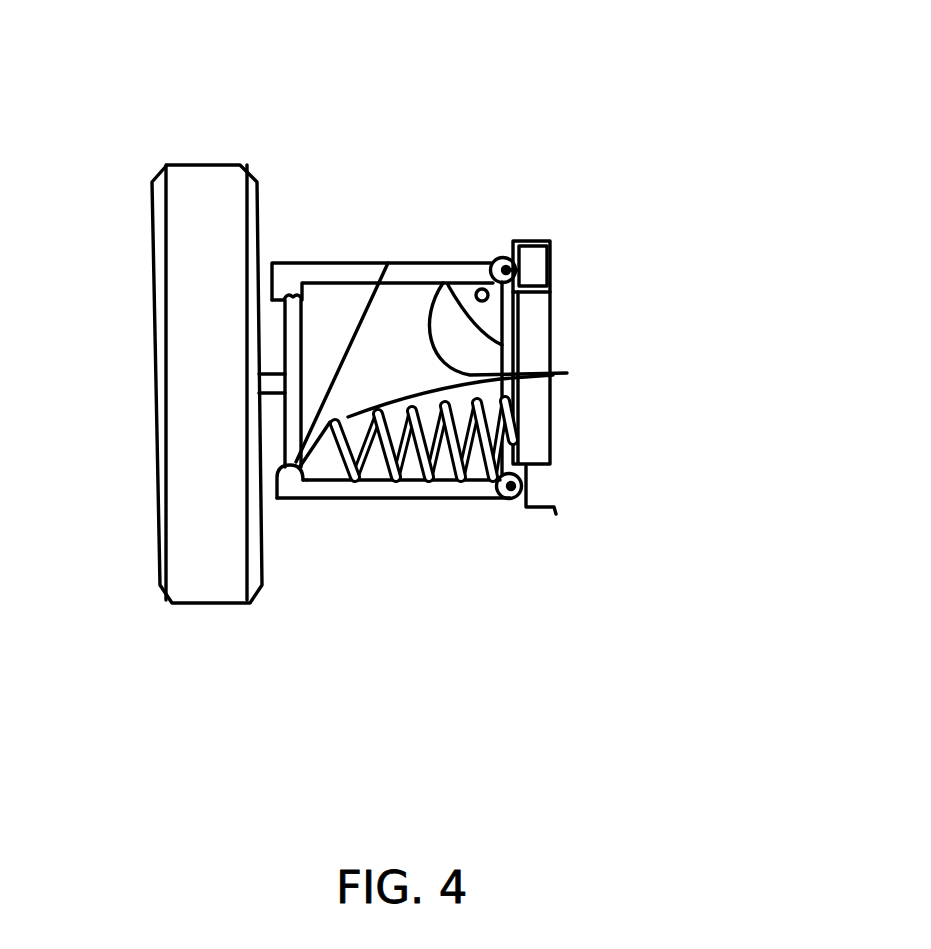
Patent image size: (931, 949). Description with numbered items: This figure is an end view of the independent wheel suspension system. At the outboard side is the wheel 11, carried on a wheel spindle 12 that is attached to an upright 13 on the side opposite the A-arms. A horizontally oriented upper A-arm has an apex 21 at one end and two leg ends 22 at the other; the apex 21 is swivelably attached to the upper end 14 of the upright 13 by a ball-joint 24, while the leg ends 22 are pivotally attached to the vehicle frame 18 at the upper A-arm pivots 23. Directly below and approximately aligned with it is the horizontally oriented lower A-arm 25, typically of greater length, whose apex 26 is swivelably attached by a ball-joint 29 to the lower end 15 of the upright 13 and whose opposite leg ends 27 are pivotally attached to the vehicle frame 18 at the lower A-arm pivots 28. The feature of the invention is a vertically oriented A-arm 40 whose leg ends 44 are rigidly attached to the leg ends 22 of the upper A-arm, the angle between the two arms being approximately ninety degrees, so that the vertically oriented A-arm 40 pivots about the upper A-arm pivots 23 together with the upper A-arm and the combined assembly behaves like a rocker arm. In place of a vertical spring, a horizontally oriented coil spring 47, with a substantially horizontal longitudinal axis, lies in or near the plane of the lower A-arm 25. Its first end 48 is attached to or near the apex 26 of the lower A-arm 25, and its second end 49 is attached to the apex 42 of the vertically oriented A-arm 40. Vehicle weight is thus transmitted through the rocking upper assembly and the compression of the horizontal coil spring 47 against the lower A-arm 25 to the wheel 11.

The wheel 11 is at (157, 493).
The wheel spindle 12 is at (267, 300).
The upright 13 is at (390, 263).
The upper end 14 is at (268, 263).
The lower end 15 is at (427, 283).
The vehicle frame 18 is at (538, 240).
The apex 21 is at (290, 298).
The leg ends 22 is at (503, 258).
The upper A-arm pivots 23 is at (550, 258).
The ball-joint 24 is at (302, 362).
The lower A-arm 25 is at (361, 501).
The apex 26 is at (289, 500).
The leg ends 27 is at (491, 500).
The lower A-arm pivots 28 is at (511, 487).
The ball-joint 29 is at (299, 500).
The vertically oriented A-arm 40 is at (440, 283).
The apex 42 is at (502, 405).
The leg ends 44 is at (452, 283).
The horizontally oriented coil spring 47 is at (445, 500).
The first end 48 is at (553, 375).
The second end 49 is at (500, 398).